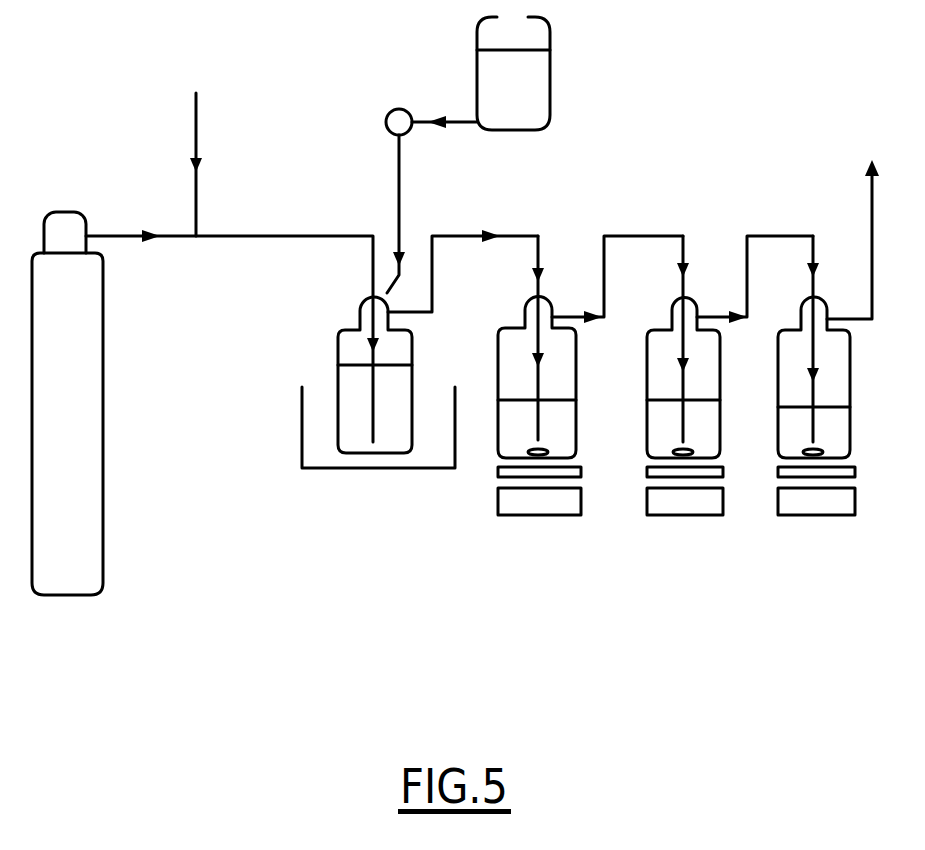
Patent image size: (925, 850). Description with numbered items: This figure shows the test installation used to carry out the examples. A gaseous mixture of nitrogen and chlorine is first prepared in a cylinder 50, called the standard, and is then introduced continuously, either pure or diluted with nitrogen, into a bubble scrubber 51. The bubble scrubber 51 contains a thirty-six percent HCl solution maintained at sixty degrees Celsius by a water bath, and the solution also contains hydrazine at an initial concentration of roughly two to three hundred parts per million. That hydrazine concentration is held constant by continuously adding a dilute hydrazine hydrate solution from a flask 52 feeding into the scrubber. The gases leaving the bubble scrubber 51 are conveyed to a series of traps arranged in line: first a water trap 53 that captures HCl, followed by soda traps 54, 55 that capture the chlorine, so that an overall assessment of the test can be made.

The cylinder 50 is at (103, 521).
The bubble scrubber 51 is at (338, 378).
The flask 52 is at (550, 86).
The water trap 53 is at (495, 423).
The soda trap 54 is at (647, 420).
The soda trap 55 is at (775, 420).